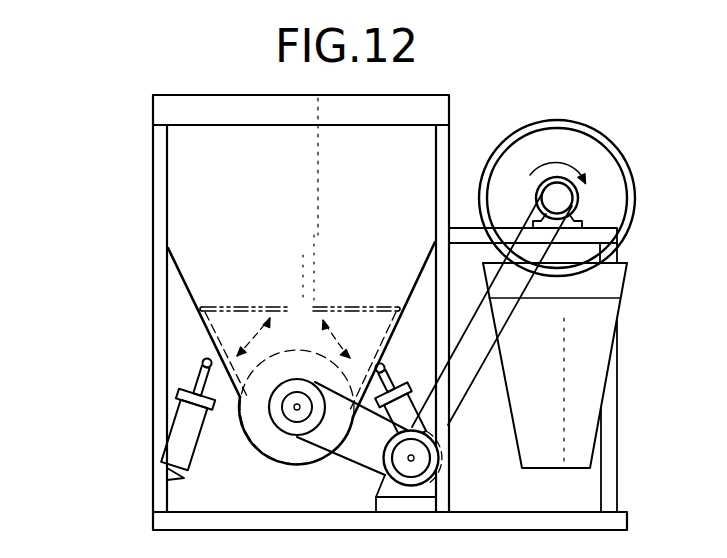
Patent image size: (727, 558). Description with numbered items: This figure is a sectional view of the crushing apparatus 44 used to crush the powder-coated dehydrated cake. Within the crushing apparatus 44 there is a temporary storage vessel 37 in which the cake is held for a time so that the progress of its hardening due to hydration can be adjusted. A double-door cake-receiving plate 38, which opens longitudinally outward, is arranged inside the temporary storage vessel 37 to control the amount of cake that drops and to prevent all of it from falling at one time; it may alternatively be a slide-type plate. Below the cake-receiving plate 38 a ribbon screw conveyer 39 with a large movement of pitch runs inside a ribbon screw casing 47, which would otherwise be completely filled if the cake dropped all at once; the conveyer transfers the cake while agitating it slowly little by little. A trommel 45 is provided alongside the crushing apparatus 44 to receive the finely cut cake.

The crushing apparatus 44 is at (329, 312).
The temporary storage vessel 37 is at (180, 233).
The ribbon screw casing 47 is at (222, 333).
The cake-receiving plate 38 is at (203, 365).
The ribbon screw conveyer 39 is at (265, 440).
The trommel 45 is at (633, 170).